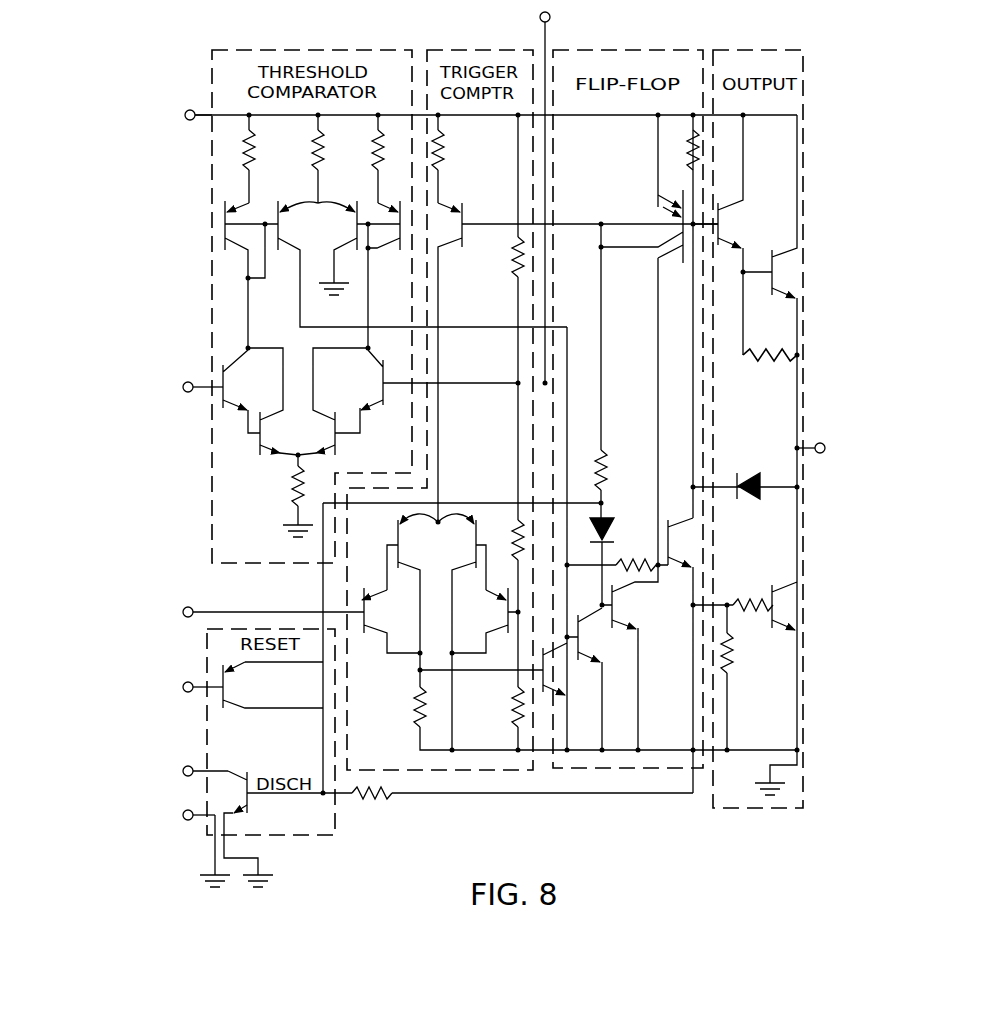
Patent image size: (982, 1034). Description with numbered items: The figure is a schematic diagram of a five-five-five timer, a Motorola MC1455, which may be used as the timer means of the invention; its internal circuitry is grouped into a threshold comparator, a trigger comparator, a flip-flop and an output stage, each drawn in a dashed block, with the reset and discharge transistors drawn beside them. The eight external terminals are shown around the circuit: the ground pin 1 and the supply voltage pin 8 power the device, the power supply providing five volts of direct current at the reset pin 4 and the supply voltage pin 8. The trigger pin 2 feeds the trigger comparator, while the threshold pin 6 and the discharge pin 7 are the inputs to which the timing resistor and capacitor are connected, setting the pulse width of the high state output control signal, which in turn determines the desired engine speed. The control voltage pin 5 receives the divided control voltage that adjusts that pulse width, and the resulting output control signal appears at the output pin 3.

The ground pin 1 is at (163, 816).
The trigger pin 2 is at (214, 613).
The output pin 3 is at (853, 442).
The reset pin 4 is at (155, 688).
The control voltage pin 5 is at (630, 196).
The threshold pin 6 is at (132, 388).
The discharge pin 7 is at (134, 772).
The supply voltage pin 8 is at (163, 117).